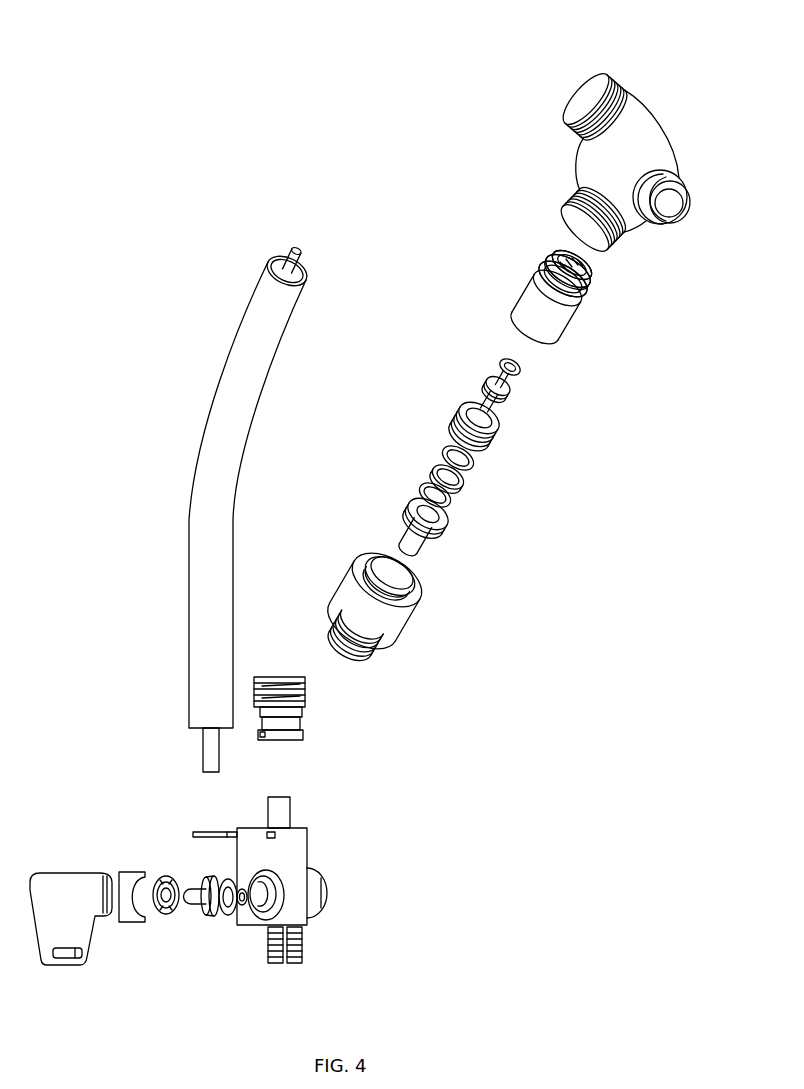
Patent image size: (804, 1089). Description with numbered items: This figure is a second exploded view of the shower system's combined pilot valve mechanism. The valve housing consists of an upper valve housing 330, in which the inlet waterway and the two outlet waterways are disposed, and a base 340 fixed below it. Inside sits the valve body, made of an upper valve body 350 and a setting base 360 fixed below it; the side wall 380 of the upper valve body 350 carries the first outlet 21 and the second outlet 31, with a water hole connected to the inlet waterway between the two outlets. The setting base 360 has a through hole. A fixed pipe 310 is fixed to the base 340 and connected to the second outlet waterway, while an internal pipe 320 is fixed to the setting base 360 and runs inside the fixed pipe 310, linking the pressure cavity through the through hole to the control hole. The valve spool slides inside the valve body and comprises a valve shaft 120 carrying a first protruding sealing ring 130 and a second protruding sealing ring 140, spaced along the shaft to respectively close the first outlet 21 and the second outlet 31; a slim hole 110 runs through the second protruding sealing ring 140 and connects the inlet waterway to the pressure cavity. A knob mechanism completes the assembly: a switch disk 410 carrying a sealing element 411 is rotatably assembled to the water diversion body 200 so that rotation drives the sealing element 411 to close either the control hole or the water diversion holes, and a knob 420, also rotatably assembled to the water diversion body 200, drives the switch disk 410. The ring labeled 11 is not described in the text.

The upper valve housing 330 is at (643, 143).
The side wall 380 is at (539, 268).
The upper valve body 350 is at (532, 317).
The first outlet 21 is at (583, 286).
The ring 11 is at (574, 298).
The second outlet 31 is at (566, 308).
The first protruding sealing ring 130 is at (502, 405).
The slim hole 110 is at (497, 435).
The valve shaft 120 is at (497, 428).
The second protruding sealing ring 140 is at (487, 447).
The setting base 360 is at (431, 546).
The base 340 is at (382, 623).
The internal pipe 320 is at (283, 262).
The fixed pipe 310 is at (210, 473).
The knob 420 is at (92, 893).
The water diversion body 200 is at (284, 866).
The switch disk 410 is at (212, 918).
The sealing element 411 is at (243, 918).